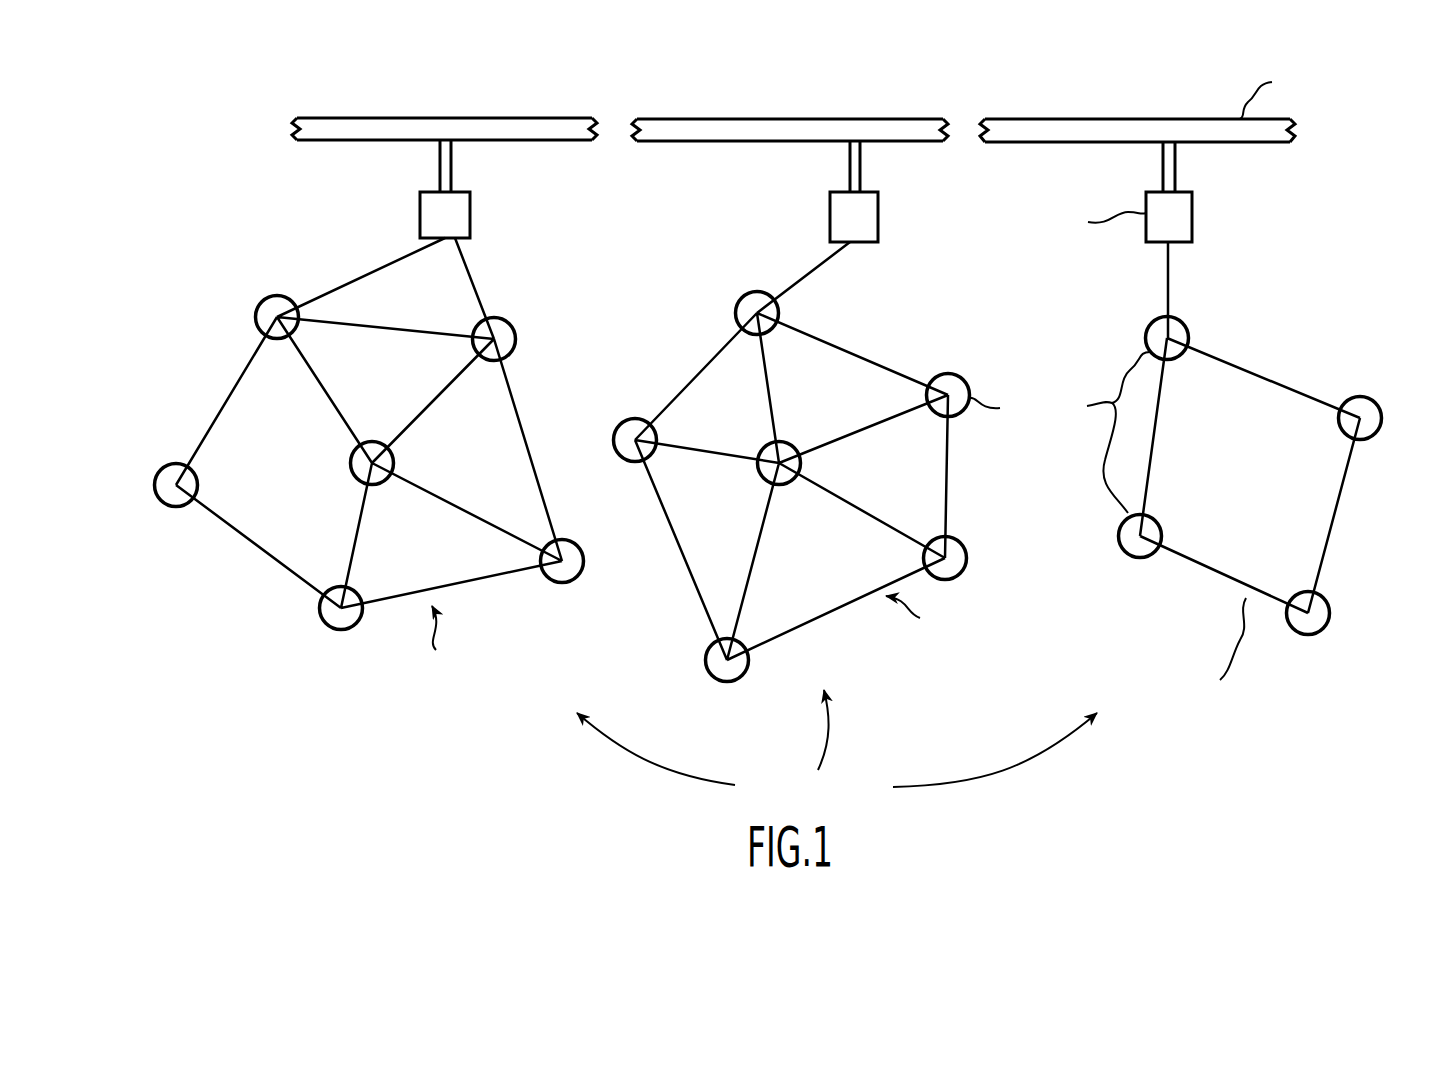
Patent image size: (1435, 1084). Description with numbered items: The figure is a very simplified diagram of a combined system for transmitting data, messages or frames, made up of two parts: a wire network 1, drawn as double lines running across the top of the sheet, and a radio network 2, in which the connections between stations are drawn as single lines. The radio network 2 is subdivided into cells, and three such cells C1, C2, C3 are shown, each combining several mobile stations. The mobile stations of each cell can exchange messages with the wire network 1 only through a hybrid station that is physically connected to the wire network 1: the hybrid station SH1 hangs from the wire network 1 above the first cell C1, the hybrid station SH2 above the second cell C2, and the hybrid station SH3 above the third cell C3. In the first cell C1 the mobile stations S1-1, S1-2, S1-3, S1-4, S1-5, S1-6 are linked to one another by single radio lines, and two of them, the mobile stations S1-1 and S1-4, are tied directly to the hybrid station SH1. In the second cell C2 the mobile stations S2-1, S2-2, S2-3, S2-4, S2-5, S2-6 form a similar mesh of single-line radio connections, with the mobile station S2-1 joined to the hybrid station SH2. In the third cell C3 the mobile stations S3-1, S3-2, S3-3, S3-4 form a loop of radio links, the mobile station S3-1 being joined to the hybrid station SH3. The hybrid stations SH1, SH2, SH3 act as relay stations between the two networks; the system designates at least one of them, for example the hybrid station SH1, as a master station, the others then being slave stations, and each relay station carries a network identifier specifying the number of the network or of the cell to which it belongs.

The wire network 1 is at (508, 118).
The radio network 2 is at (283, 636).
The hybrid station SH1 is at (470, 210).
The hybrid station SH2 is at (878, 212).
The hybrid station SH3 is at (1192, 222).
The mobile station S1-1 is at (262, 301).
The mobile station S1-2 is at (168, 506).
The mobile station S1-3 is at (351, 470).
The mobile station S1-4 is at (510, 325).
The mobile station S1-5 is at (356, 627).
The mobile station S1-6 is at (568, 582).
The mobile station S2-1 is at (744, 298).
The mobile station S2-2 is at (638, 418).
The mobile station S2-3 is at (785, 442).
The mobile station S2-4 is at (958, 375).
The mobile station S2-5 is at (737, 681).
The mobile station S2-6 is at (962, 544).
The mobile station S3-1 is at (1185, 324).
The mobile station S3-2 is at (1134, 557).
The mobile station S3-3 is at (1355, 397).
The mobile station S3-4 is at (1327, 628).
The cell C1 is at (258, 568).
The cell C2 is at (860, 623).
The cell C3 is at (1270, 626).